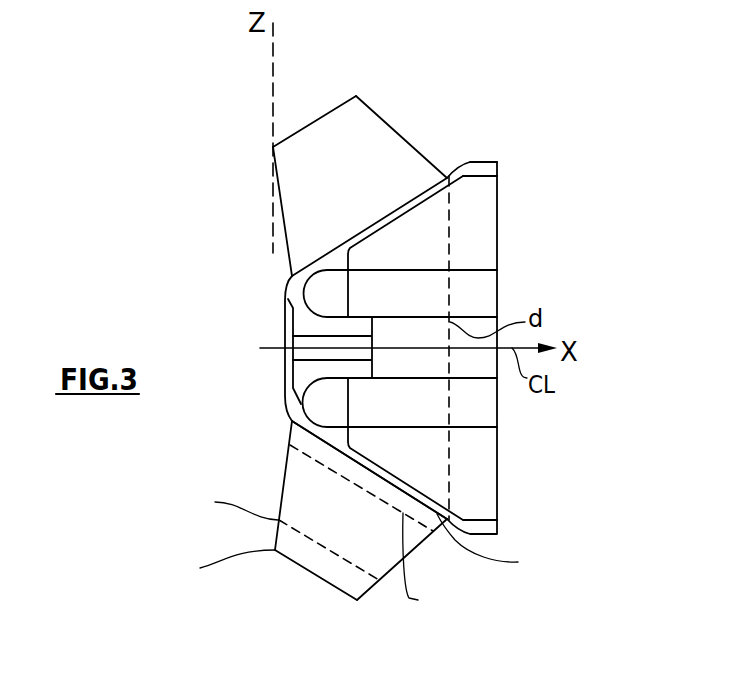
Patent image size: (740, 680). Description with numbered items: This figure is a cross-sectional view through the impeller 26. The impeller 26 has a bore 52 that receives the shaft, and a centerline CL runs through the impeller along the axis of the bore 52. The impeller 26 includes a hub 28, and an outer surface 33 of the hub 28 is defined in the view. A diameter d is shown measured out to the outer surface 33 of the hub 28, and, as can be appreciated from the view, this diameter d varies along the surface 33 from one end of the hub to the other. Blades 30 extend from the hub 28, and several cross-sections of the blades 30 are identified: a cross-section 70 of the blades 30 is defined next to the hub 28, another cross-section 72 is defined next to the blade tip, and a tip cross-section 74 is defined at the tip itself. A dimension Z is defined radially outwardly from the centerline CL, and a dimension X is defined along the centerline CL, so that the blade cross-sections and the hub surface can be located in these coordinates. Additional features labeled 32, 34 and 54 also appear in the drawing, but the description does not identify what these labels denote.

The impeller 26 is at (349, 336).
The blades 30 is at (328, 143).
The cutting edge 34 is at (418, 148).
The flange 54 is at (488, 168).
The relief edge 32 is at (290, 265).
The hub 28 is at (290, 292).
The bore 52 is at (299, 354).
The cross-section of the blades next to the hub 70 is at (330, 478).
The outer surface of the hub 33 is at (371, 477).
The tip cross-section 74 is at (288, 559).
The cross-section next to the tip 72 is at (333, 586).